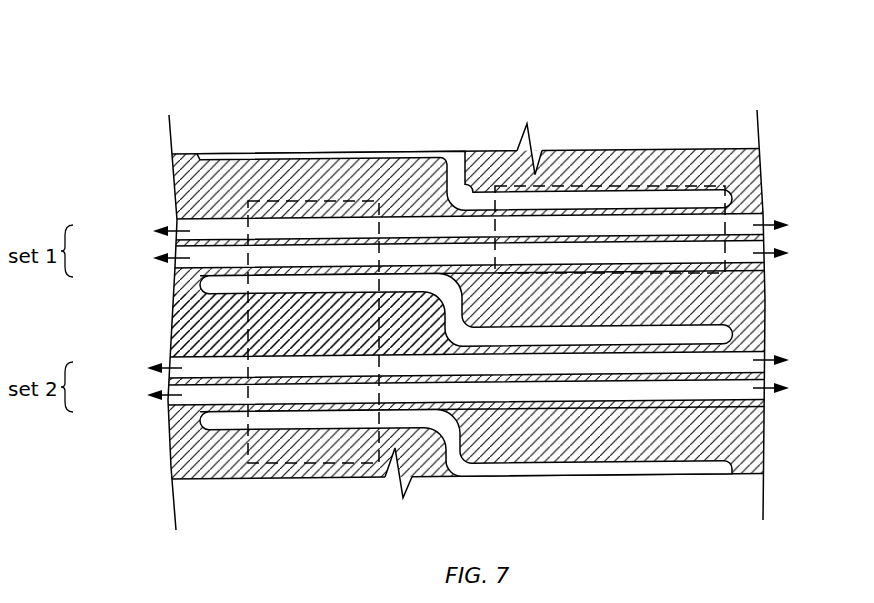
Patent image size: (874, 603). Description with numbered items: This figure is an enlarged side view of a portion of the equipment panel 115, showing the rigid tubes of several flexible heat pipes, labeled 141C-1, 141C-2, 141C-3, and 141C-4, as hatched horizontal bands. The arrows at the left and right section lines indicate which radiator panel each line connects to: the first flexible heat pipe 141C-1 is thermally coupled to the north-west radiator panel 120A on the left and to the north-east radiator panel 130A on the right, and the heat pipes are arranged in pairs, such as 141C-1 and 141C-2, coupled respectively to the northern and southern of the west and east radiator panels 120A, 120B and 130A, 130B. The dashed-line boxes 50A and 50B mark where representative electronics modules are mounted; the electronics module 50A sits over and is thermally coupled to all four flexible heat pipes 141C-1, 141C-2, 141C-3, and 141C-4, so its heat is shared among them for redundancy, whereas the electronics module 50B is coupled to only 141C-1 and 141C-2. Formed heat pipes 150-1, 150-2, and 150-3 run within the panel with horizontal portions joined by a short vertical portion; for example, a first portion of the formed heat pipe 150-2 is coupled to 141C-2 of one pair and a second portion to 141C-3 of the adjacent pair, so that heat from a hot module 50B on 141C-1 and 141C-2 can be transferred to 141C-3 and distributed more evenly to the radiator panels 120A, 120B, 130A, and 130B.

The equipment panel 115 is at (470, 277).
The electronics module 50A is at (305, 199).
The electronics module 50B is at (690, 183).
The flexible heat pipe 141C-1 is at (403, 228).
The flexible heat pipe 141C-2 is at (625, 257).
The flexible heat pipe 141C-3 is at (287, 360).
The flexible heat pipe 141C-4 is at (618, 394).
The formed heat pipe 150-1 is at (603, 200).
The formed heat pipe 150-2 is at (523, 333).
The formed heat pipe 150-3 is at (527, 467).
The north-west radiator panel 120A is at (139, 303).
The west radiator panel 120B is at (139, 330).
The north-east radiator panel 130A is at (804, 293).
The east radiator panel 130B is at (804, 321).